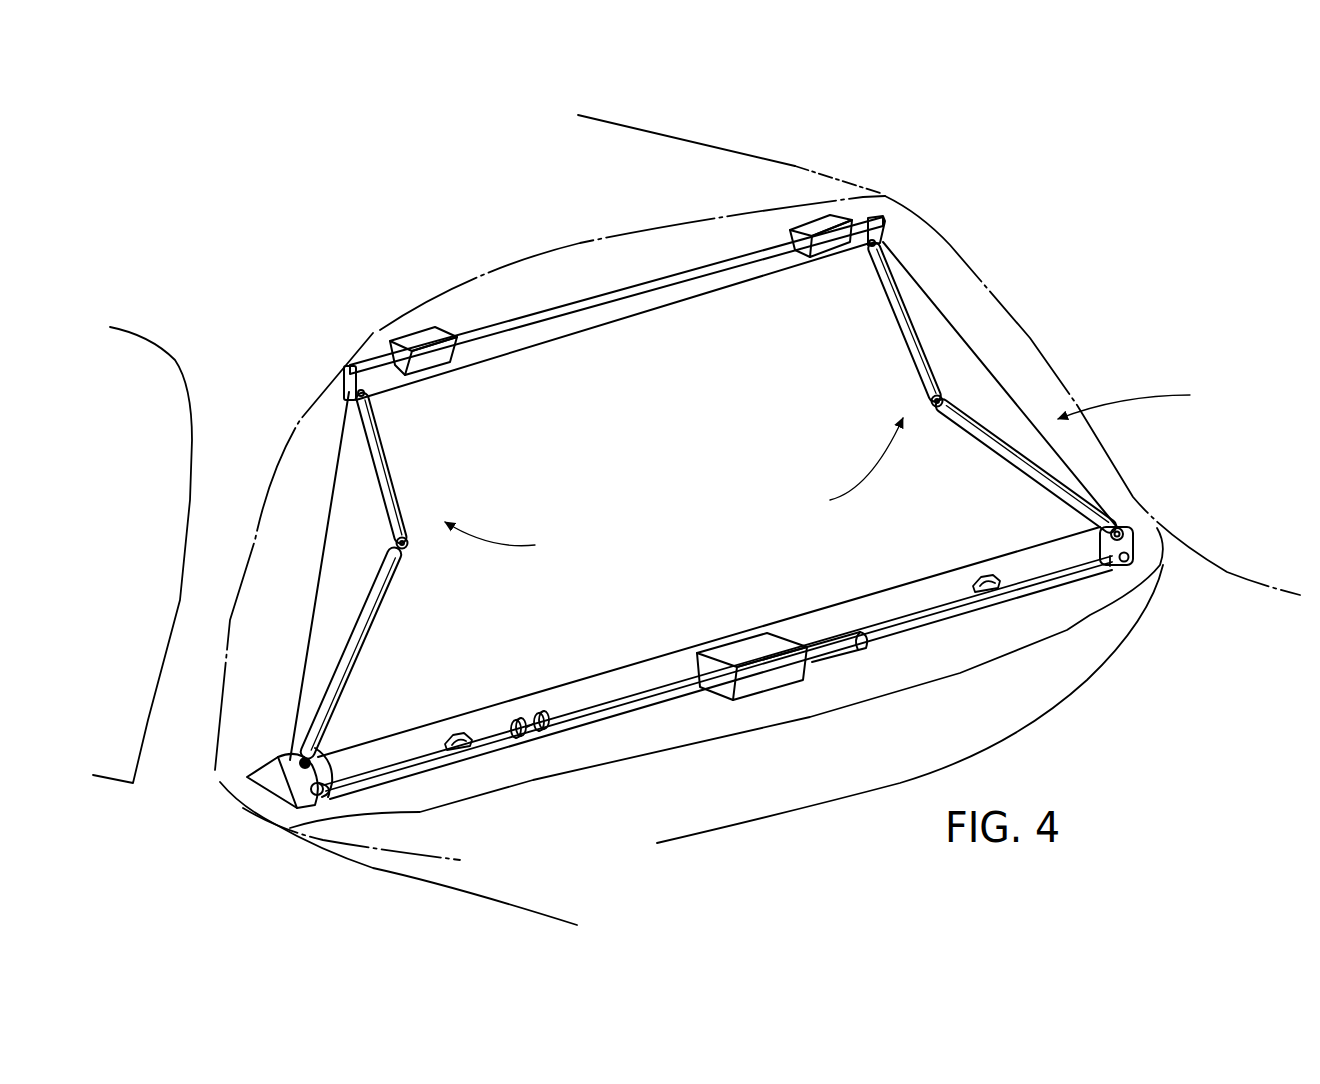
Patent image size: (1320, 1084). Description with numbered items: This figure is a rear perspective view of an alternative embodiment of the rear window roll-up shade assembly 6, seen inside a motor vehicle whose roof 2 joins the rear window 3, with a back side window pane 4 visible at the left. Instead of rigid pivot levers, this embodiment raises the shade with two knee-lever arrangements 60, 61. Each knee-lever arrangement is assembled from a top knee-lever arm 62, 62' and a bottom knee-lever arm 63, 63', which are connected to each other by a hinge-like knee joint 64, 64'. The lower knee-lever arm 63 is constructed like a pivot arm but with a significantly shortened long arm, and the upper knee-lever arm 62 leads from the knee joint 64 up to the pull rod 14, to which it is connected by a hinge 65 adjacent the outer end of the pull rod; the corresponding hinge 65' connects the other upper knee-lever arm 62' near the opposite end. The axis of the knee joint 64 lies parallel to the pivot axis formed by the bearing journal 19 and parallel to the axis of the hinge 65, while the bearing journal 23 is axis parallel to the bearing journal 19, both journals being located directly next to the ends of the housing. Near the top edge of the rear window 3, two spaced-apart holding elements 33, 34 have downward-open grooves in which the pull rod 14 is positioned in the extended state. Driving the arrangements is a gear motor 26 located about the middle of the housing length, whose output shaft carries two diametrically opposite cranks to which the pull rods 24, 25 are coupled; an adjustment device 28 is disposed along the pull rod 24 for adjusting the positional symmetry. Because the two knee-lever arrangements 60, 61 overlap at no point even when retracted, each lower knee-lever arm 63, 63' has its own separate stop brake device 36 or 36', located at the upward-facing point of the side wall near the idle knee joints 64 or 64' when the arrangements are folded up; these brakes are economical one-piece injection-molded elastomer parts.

The roof 2 is at (723, 143).
The rear window 3 is at (1028, 338).
The back side window pane 4 is at (125, 532).
The roll-up shade assembly 6 is at (718, 652).
The pull rod 14 is at (597, 297).
The bearing journal 19 is at (300, 757).
The bearing journal 23 is at (1123, 527).
The pull rod 24 is at (400, 758).
The pull rod 25 is at (970, 607).
The gear motor 26 is at (742, 657).
The adjustment device 28 is at (531, 716).
The holding element 33 is at (412, 335).
The holding element 34 is at (822, 227).
The stop brake device 36 is at (484, 683).
The stop brake device 36' is at (1000, 538).
The knee-lever arrangement 60 is at (850, 467).
The knee-lever arrangement 61 is at (506, 539).
The upper knee-lever arm 62 is at (438, 466).
The upper knee-lever arm 62' is at (982, 306).
The lower knee-lever arm 63 is at (423, 653).
The lower knee-lever arm 63' is at (994, 473).
The knee joint 64 is at (489, 495).
The knee joint 64' is at (853, 383).
The hinge 65 is at (280, 391).
The hinge 65' is at (963, 187).